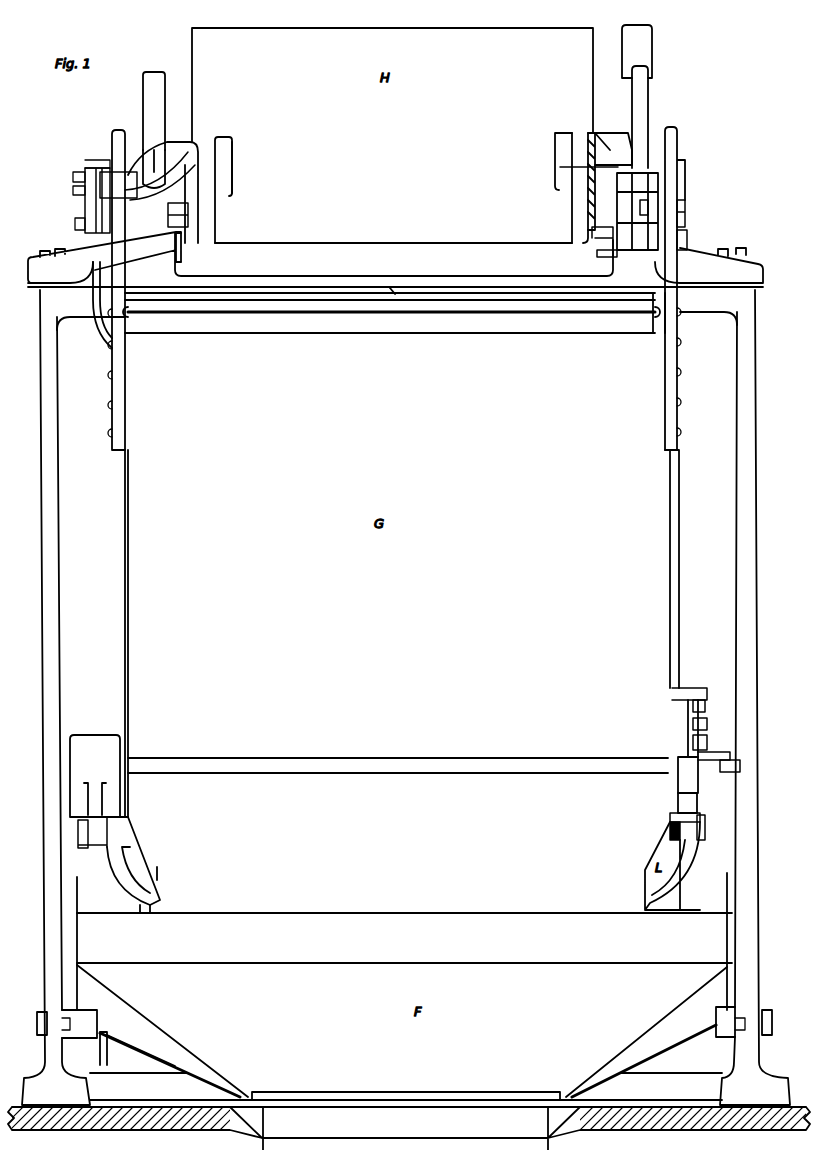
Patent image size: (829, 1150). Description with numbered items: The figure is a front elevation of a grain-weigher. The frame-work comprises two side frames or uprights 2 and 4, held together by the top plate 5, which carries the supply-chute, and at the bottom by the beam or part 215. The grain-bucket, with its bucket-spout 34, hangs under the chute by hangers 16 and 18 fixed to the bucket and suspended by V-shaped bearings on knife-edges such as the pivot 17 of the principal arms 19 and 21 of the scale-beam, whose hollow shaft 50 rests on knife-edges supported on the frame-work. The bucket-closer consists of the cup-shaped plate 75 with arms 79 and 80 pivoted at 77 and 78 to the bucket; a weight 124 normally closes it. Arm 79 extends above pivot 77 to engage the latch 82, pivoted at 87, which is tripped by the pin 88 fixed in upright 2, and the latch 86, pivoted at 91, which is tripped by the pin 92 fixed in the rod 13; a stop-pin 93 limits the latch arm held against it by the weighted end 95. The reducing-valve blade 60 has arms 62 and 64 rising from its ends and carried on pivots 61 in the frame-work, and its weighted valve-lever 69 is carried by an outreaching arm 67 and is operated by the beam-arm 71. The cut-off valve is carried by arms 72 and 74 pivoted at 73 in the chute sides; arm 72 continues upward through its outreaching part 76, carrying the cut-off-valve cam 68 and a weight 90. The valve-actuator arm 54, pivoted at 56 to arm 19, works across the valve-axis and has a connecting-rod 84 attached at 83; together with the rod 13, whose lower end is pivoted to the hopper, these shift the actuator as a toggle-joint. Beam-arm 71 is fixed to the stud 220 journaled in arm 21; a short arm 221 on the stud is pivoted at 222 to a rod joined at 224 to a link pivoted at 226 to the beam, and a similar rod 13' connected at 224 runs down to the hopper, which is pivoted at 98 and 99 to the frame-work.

The side frame or upright 2 is at (745, 495).
The side frame or upright 4 is at (50, 519).
The top plate 5 is at (33, 275).
The rod 13 is at (686, 498).
The rod 13' is at (88, 305).
The hanger 16 is at (672, 150).
The pivot or knife-edge 17 is at (128, 190).
The hanger 18 is at (116, 165).
The principal arm of scale-beam 19 is at (617, 140).
The principal arm of scale-beam 21 is at (160, 176).
The bucket-spout 34 is at (335, 913).
The hollow shaft of scale-beam 50 is at (592, 140).
The valve-actuator arm 54 is at (648, 205).
The pivot 56 is at (688, 237).
The valve-blade (reducing-valve) 60 is at (190, 138).
The pivot 61 is at (233, 146).
The valve-arm 62 is at (580, 197).
The valve-arm 64 is at (208, 190).
The outreaching arm 67 is at (192, 148).
The cut-off-valve cam 68 is at (640, 190).
The valve-lever 69 is at (154, 111).
The beam-arm 71 is at (154, 169).
The arm of cut-off valve 72 is at (642, 93).
The pivot 73 is at (166, 222).
The arm of cut-off valve 74 is at (177, 238).
The closer plate 75 is at (146, 882).
The outreaching part of arm 76 is at (612, 168).
The pivot 77 is at (706, 827).
The pivot 78 is at (78, 840).
The closer arm 79 is at (698, 804).
The closer arm 80 is at (125, 862).
The latch 82 is at (392, 290).
The pivot 83 is at (686, 212).
The connecting-rod 84 is at (640, 215).
The latch 86 is at (688, 735).
The pivot 87 is at (707, 740).
The pin 88 is at (740, 766).
The weight 90 is at (637, 51).
The pivot 91 is at (707, 704).
The pin 92 is at (706, 720).
The stop-pin 93 is at (706, 688).
The weighted end 95 is at (684, 781).
The pivot 98 is at (742, 1022).
The pivot 99 is at (68, 1022).
The weight 124 is at (95, 776).
The beam 215 is at (142, 1062).
The stud 220 is at (96, 178).
The short arm 221 is at (86, 211).
The pivot 222 is at (76, 226).
The pivot 224 is at (73, 190).
The pivot 226 is at (73, 177).